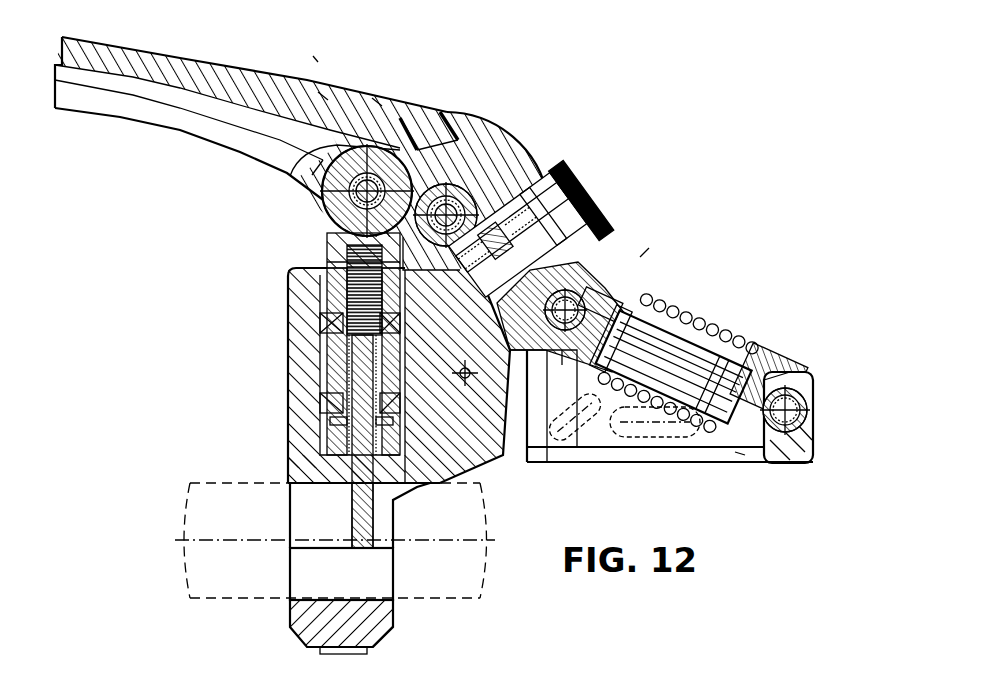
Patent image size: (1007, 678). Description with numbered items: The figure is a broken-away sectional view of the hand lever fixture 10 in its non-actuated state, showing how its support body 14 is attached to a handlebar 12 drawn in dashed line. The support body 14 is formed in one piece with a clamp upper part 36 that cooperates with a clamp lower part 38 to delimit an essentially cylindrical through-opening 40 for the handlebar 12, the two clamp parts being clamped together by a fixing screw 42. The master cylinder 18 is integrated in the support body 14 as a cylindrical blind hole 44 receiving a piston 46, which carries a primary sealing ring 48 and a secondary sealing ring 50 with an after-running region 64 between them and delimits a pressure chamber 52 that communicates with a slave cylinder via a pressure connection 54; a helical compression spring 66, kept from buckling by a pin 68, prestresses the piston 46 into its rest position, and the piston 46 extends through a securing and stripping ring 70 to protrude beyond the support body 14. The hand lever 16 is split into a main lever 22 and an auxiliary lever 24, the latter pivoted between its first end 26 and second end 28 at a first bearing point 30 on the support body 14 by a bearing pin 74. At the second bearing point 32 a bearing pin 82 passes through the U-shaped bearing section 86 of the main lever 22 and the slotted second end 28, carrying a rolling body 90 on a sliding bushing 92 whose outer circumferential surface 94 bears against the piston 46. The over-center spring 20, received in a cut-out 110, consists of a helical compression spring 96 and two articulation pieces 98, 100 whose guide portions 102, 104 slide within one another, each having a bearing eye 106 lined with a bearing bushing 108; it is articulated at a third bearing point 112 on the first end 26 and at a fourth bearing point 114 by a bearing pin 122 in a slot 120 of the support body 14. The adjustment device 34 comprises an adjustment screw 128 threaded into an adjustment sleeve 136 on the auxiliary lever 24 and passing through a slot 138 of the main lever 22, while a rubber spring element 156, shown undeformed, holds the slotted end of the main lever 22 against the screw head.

The hand lever fixture 10 is at (649, 248).
The handlebar 12 is at (240, 604).
The support body 14 is at (510, 462).
The hand lever 16 is at (315, 52).
The master cylinder 18 is at (305, 337).
The over-center spring 20 is at (686, 292).
The main lever 22 is at (160, 103).
The auxiliary lever 24 is at (537, 278).
The first end of auxiliary lever 26 is at (553, 373).
The second end of auxiliary lever 28 is at (320, 199).
The first bearing point 30 is at (498, 140).
The second bearing point 32 is at (378, 96).
The adjustment device 34 is at (593, 163).
The clamp upper part 36 is at (275, 472).
The clamp lower part 38 is at (300, 640).
The through-opening 40 is at (353, 587).
The fixing screw 42 is at (348, 651).
The cylindrical blind hole 44 is at (330, 360).
The piston 46 is at (312, 273).
The primary sealing ring 48 is at (330, 448).
The secondary sealing ring 50 is at (320, 306).
The pressure chamber 52 is at (328, 515).
The pressure connection 54 is at (370, 515).
The after-running region 64 is at (290, 351).
The helical compression spring 66 is at (318, 410).
The pin 68 is at (369, 515).
The securing and stripping ring 70 is at (399, 360).
The bearing pin 74 is at (488, 128).
The bearing pin 82 is at (337, 139).
The bearing section 86 is at (305, 172).
The rolling body 90 is at (325, 255).
The sliding bushing 92 is at (325, 243).
The outer circumferential surface 94 is at (325, 92).
The helical compression spring 96 is at (695, 307).
The articulation piece 98 is at (598, 450).
The articulation piece 100 is at (778, 360).
The guide portion 102 is at (632, 300).
The guide portion 104 is at (655, 445).
The bearing eye 106 is at (722, 474).
The bearing bushing 108 is at (647, 258).
The cut-out 110 is at (672, 470).
The third bearing point 112 is at (512, 445).
The fourth bearing point 114 is at (804, 382).
The slot 120 is at (808, 407).
The bearing pin 122 is at (812, 442).
The adjustment screw 128 is at (520, 166).
The adjustment sleeve 136 is at (598, 200).
The slot 138 is at (537, 132).
The spring element 156 is at (443, 108).